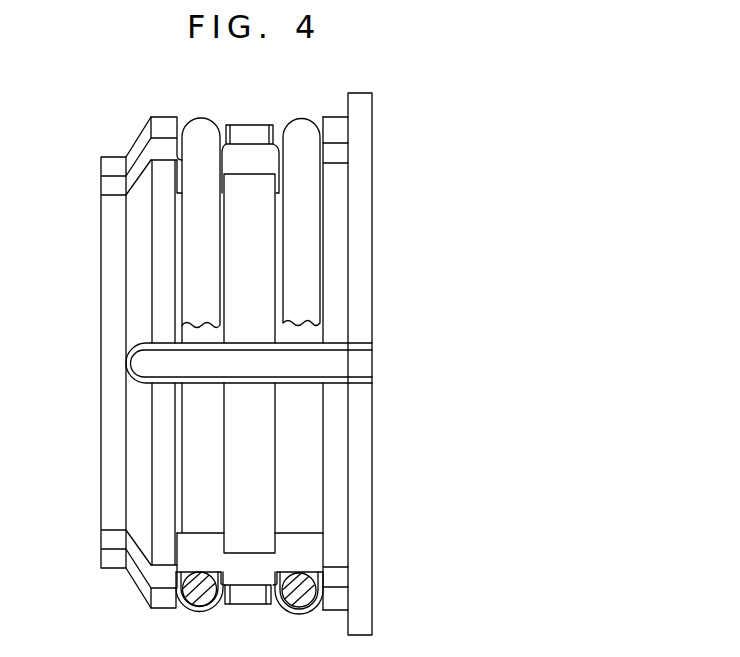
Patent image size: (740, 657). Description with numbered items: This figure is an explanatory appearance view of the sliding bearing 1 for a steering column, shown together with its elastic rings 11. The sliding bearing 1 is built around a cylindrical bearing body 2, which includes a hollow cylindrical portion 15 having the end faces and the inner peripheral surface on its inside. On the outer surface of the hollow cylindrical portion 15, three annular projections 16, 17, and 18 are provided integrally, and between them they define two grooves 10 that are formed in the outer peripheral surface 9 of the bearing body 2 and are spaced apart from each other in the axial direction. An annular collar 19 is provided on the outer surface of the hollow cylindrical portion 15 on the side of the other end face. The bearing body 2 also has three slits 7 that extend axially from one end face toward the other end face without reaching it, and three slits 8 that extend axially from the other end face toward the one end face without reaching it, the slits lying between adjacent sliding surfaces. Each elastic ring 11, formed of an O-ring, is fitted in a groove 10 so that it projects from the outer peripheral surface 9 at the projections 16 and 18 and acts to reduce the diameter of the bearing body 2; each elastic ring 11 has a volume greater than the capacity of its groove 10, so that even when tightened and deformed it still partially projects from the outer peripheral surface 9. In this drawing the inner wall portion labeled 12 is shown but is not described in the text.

The sliding bearing 1 is at (103, 114).
The bearing body 2 is at (100, 424).
The slits 7 is at (168, 147).
The slits 8 is at (350, 367).
The outer peripheral surface 9 is at (160, 277).
The grooves 10 is at (190, 462).
The elastic rings 11 is at (203, 133).
The inner wall 12 is at (362, 197).
The hollow cylindrical portion 15 is at (103, 330).
The annular projection 16 is at (162, 228).
The annular projection 17 is at (253, 141).
The annular projection 18 is at (337, 180).
The annular collar 19 is at (362, 280).